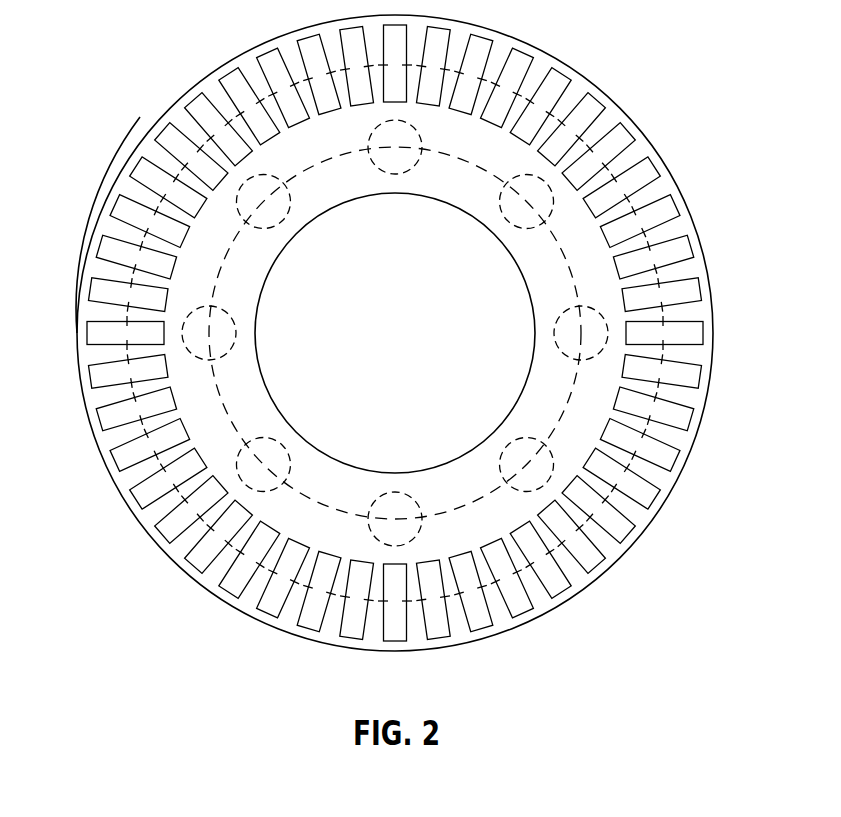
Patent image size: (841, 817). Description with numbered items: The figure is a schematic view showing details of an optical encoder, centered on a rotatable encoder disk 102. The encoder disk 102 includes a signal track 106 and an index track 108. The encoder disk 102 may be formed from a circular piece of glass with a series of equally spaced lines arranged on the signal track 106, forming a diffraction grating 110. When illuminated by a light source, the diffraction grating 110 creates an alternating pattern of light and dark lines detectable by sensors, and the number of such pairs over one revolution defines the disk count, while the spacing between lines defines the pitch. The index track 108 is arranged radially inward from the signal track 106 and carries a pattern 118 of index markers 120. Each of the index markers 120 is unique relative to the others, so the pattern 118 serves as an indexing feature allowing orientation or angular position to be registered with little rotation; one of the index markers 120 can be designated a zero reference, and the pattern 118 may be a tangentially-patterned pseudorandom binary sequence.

The encoder disk 102 is at (673, 180).
The signal track 106 is at (165, 183).
The index track 108 is at (225, 410).
The diffraction grating 110 is at (97, 245).
The pattern 118 is at (455, 527).
The index markers 120 is at (527, 440).